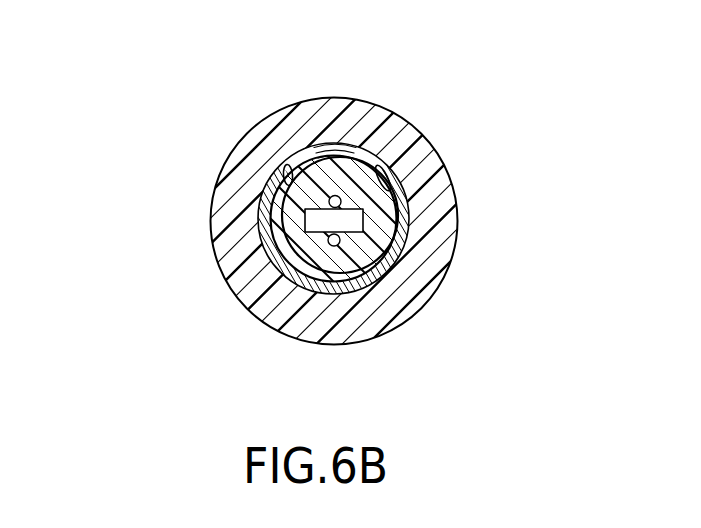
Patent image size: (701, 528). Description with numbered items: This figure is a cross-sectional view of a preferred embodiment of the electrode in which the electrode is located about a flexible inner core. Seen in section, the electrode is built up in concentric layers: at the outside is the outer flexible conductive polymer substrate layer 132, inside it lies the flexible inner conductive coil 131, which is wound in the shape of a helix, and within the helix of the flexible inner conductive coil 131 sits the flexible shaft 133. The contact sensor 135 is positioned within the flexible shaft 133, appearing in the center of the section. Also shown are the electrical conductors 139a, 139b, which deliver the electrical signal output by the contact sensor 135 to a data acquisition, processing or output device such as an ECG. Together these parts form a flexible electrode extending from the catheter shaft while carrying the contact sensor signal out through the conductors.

The flexible inner conductive coil 131 is at (257, 208).
The outer flexible conductive polymer substrate layer 132 is at (232, 289).
The flexible shaft 133 is at (300, 190).
The contact sensor 135 is at (352, 219).
The electrical conductor 139a is at (337, 196).
The electrical conductor 139b is at (333, 246).